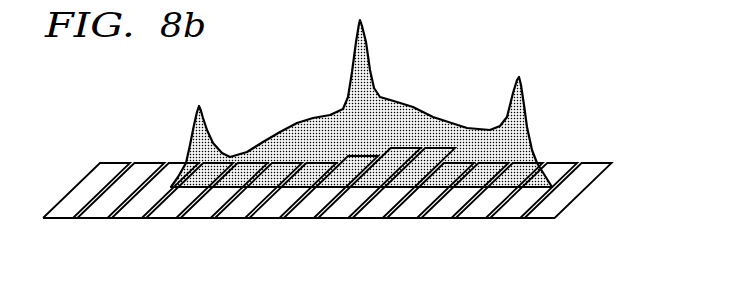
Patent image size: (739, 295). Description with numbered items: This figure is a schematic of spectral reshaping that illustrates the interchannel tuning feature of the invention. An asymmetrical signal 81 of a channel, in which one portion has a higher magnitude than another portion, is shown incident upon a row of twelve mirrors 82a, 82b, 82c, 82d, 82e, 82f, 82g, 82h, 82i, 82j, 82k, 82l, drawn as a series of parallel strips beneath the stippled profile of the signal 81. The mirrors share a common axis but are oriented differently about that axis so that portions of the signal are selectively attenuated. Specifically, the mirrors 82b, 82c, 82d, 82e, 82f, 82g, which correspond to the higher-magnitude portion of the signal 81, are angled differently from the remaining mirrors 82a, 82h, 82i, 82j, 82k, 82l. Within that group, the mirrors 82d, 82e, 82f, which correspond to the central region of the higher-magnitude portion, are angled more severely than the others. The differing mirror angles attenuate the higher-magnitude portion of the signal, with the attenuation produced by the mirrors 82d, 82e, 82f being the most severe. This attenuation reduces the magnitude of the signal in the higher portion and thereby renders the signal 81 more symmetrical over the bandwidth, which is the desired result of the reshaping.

The asymmetrical signal 81 is at (420, 108).
The mirror 82a is at (514, 218).
The mirror 82b is at (486, 218).
The mirror 82c is at (446, 218).
The mirror 82d is at (416, 218).
The mirror 82e is at (372, 218).
The mirror 82f is at (342, 218).
The mirror 82g is at (302, 218).
The mirror 82h is at (272, 218).
The mirror 82i is at (228, 218).
The mirror 82j is at (198, 218).
The mirror 82k is at (153, 218).
The mirror 82l is at (126, 218).